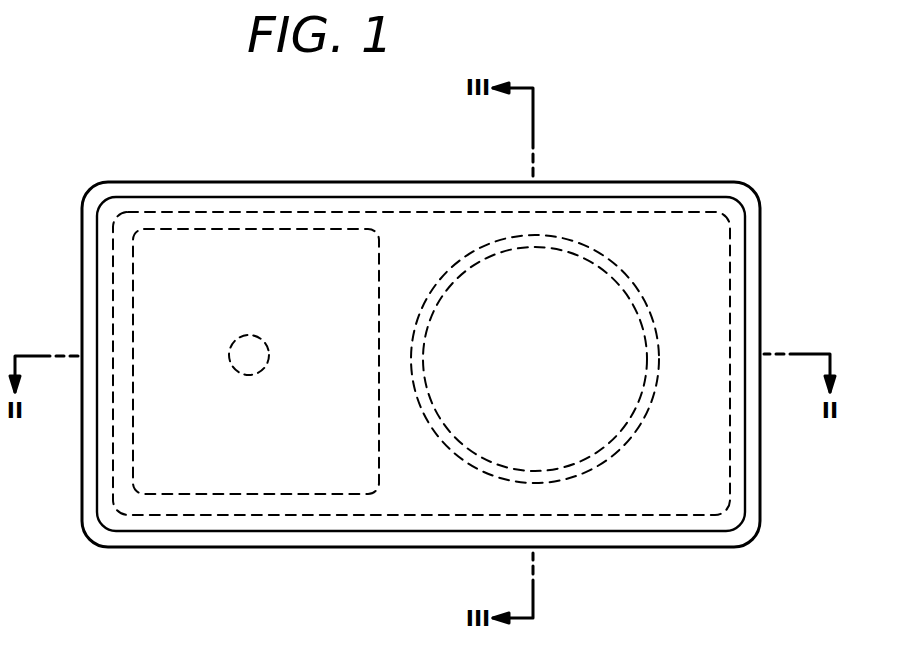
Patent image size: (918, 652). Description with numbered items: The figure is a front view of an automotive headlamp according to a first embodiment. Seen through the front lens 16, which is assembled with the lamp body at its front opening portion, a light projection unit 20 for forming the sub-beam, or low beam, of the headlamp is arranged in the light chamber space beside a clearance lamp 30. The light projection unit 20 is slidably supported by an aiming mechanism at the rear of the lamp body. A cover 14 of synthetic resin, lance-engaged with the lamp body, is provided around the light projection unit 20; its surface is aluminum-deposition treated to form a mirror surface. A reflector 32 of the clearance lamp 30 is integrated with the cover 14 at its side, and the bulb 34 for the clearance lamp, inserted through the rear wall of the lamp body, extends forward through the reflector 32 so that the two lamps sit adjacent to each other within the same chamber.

The cover 14 is at (428, 232).
The front lens 16 is at (423, 490).
The light projection unit 20 is at (572, 317).
The clearance lamp 30 is at (191, 266).
The reflector 32 is at (223, 480).
The bulb 34 is at (257, 335).